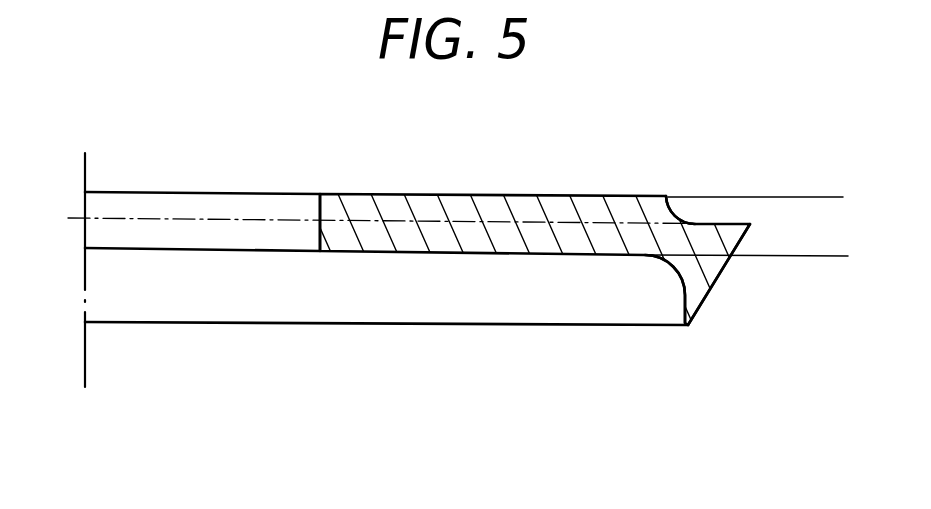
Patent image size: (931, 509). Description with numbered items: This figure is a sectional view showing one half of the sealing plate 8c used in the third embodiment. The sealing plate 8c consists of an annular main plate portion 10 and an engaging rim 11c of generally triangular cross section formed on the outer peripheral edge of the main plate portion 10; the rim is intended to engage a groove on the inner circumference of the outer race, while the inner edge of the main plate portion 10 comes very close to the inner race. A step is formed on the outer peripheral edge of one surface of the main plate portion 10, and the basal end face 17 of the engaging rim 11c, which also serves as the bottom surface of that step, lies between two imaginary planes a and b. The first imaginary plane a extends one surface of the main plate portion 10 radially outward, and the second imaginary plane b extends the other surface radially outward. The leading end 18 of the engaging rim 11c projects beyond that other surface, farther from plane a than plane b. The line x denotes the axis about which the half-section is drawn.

The axis of tool shank x is at (222, 218).
The main plate portion 10 is at (376, 205).
The sealing plate 8c is at (530, 205).
The basal end face 17 is at (718, 220).
The leading end 18 is at (674, 322).
The engaging rim 11c is at (710, 263).
The first imaginary plane a is at (764, 197).
The second imaginary plane b is at (770, 257).